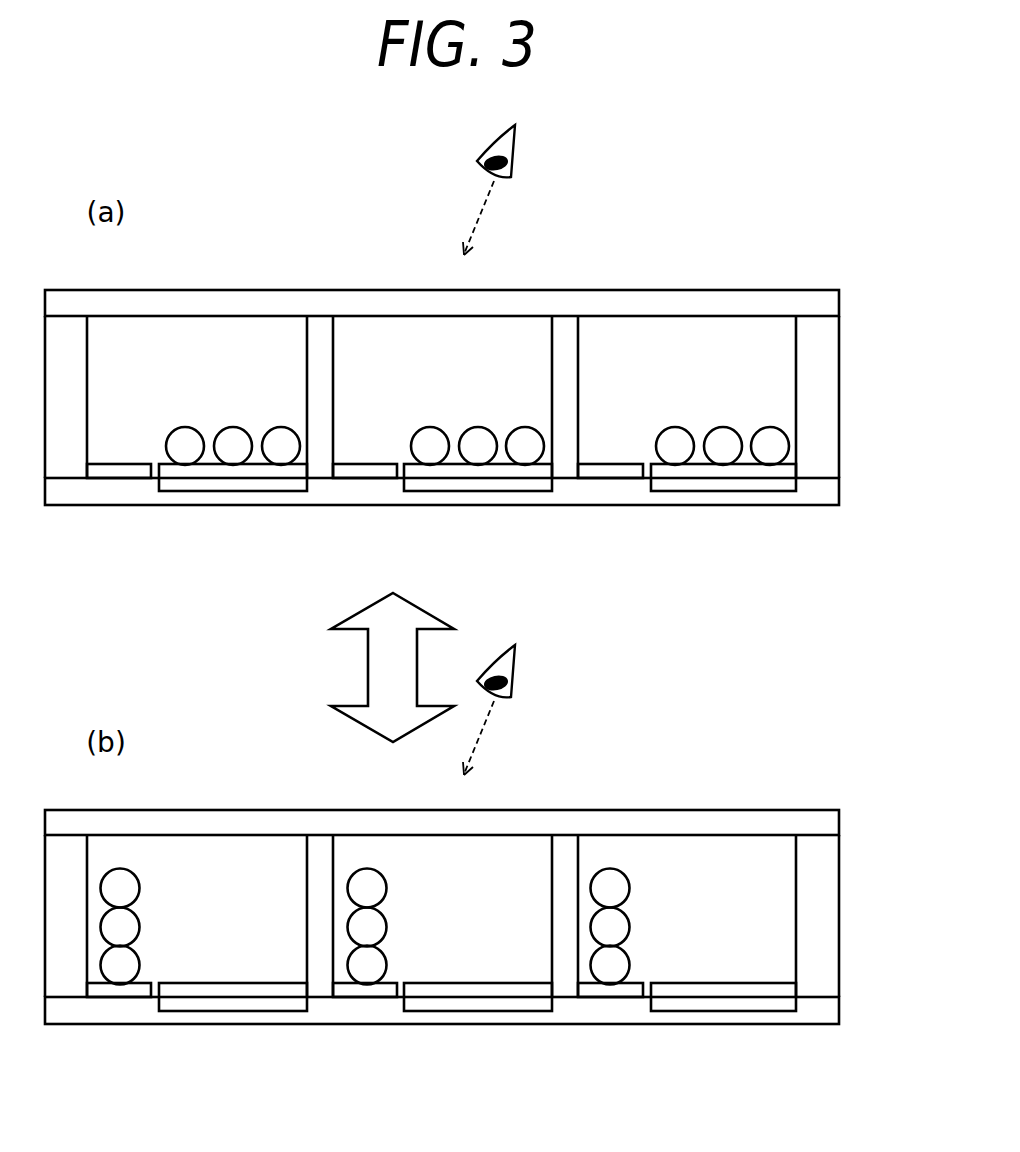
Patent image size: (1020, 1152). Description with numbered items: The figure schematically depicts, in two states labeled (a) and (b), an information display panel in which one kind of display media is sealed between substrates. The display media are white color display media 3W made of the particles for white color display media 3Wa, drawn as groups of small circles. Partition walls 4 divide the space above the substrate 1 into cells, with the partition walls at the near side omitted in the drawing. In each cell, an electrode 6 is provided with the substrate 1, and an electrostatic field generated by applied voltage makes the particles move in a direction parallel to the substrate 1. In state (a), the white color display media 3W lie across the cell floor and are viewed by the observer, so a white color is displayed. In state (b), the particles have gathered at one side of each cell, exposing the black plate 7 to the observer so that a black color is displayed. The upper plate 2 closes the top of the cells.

The substrate 1 is at (614, 494).
The transparent counter substrate 2 is at (690, 302).
The partition walls 4 is at (67, 445).
The electrode 6 is at (205, 470).
The black plate 7 is at (247, 492).
The particles for white color display media 3Wa is at (430, 438).
The white color display media 3W is at (855, 428).